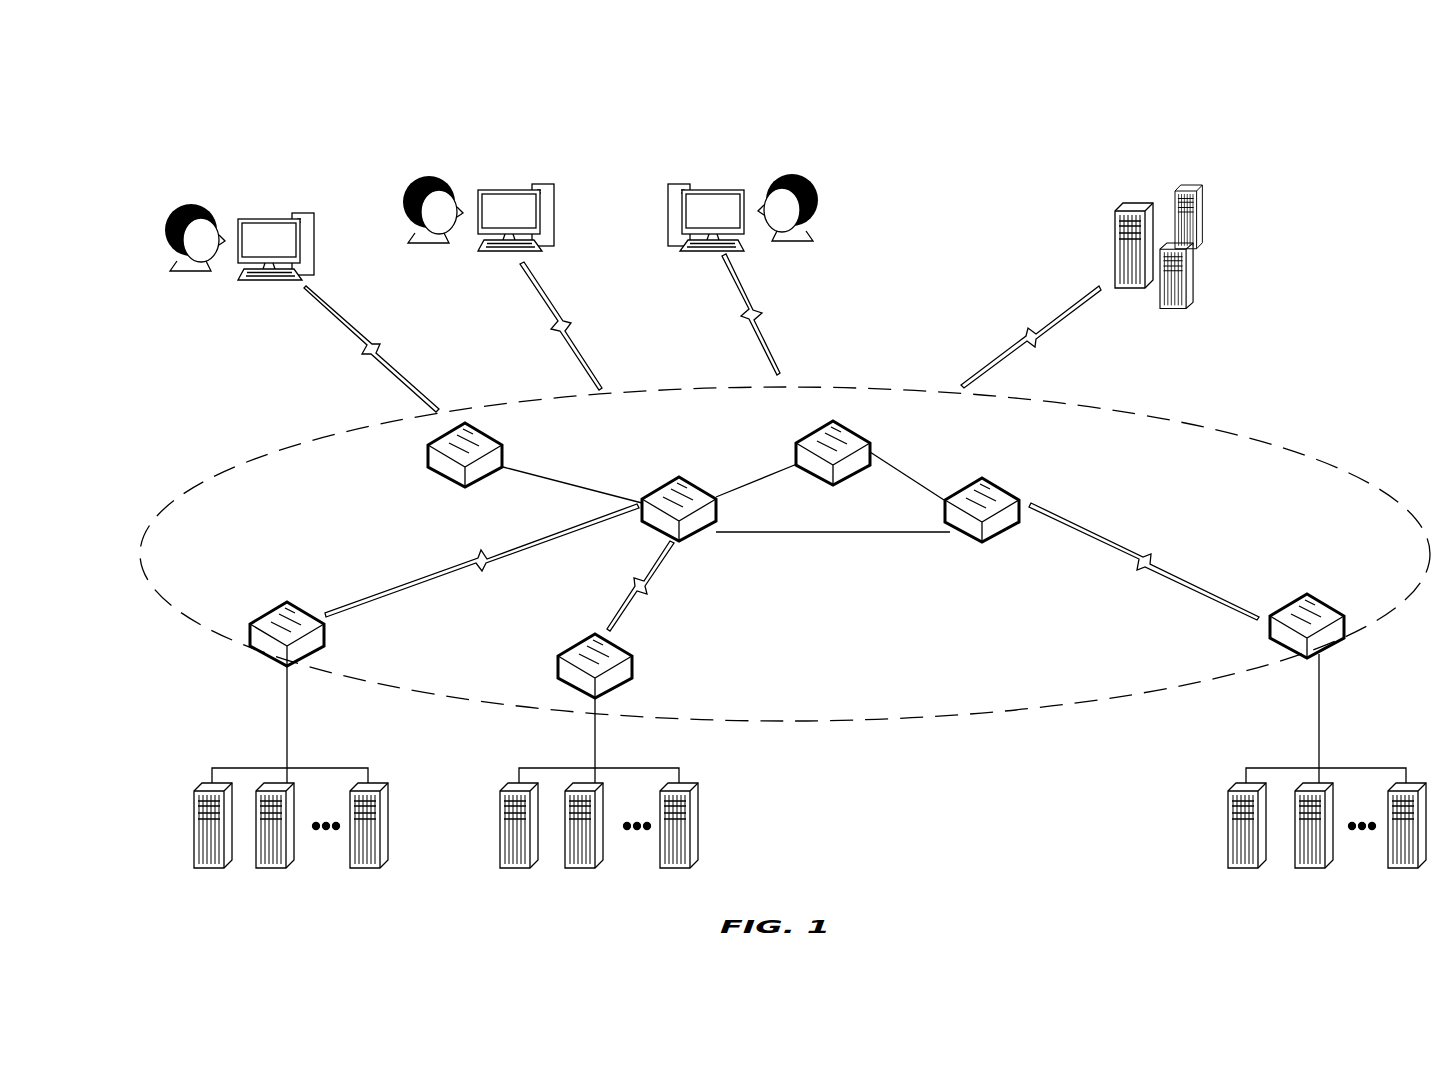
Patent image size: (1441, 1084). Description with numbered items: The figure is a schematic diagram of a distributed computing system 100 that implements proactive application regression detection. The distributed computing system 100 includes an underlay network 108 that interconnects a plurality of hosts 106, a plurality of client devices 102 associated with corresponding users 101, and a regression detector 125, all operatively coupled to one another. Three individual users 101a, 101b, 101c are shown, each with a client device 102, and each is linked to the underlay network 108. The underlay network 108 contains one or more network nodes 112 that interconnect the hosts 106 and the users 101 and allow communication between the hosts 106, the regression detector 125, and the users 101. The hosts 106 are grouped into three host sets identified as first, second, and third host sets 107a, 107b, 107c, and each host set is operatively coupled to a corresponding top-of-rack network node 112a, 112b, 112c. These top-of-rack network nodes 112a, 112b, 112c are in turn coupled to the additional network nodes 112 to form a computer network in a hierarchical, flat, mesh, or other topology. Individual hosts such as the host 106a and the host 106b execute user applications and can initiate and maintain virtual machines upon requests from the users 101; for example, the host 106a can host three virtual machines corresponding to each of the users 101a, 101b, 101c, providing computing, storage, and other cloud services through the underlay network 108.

The distributed computing system 100 is at (1288, 165).
The users 101 is at (160, 148).
The user 101a is at (152, 218).
The user 101b is at (390, 188).
The user 101c is at (826, 192).
The client devices 102 is at (292, 218).
The hosts 106 is at (758, 774).
The host 106a is at (198, 794).
The host 106b is at (682, 792).
The first host set 107a is at (232, 780).
The second host set 107b is at (591, 796).
The third host set 107c is at (1370, 740).
The underlay network 108 is at (866, 694).
The network nodes 112 is at (433, 444).
The top-of-rack network node 112a is at (260, 620).
The top-of-rack network node 112b is at (582, 642).
The top-of-rack network node 112c is at (1326, 606).
The regression detector 125 is at (1166, 374).